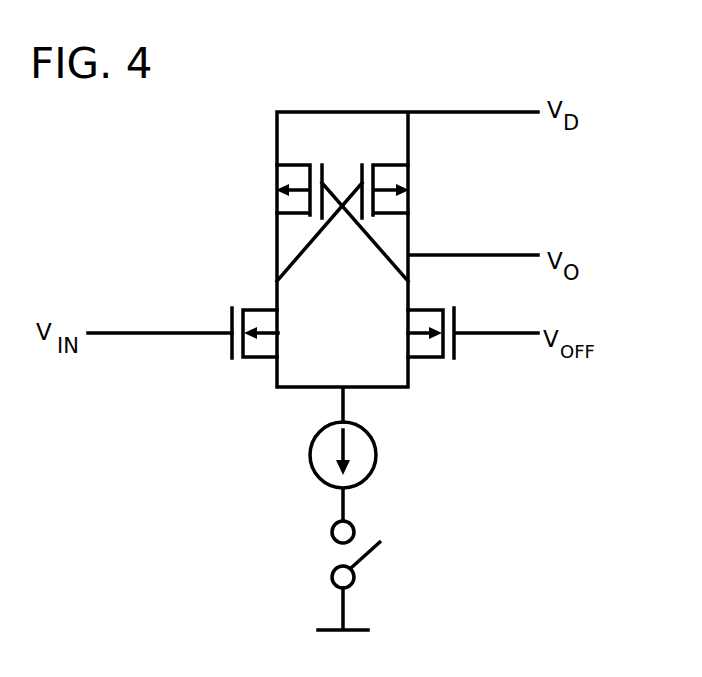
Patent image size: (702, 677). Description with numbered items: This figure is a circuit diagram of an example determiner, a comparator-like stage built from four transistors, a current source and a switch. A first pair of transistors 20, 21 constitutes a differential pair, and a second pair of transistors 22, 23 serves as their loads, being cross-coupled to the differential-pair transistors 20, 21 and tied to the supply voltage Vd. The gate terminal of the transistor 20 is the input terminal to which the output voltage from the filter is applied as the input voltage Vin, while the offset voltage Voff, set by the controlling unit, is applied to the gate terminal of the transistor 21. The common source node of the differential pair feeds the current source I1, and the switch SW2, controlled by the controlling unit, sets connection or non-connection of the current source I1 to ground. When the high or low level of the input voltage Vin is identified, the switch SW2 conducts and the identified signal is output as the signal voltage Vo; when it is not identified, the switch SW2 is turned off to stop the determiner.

The transistor M22 22 is at (310, 223).
The transistor M23 23 is at (372, 223).
The transistor M20 20 is at (245, 352).
The transistor M21 21 is at (445, 354).
The current source I1 is at (361, 471).
The switch SW2 is at (379, 575).